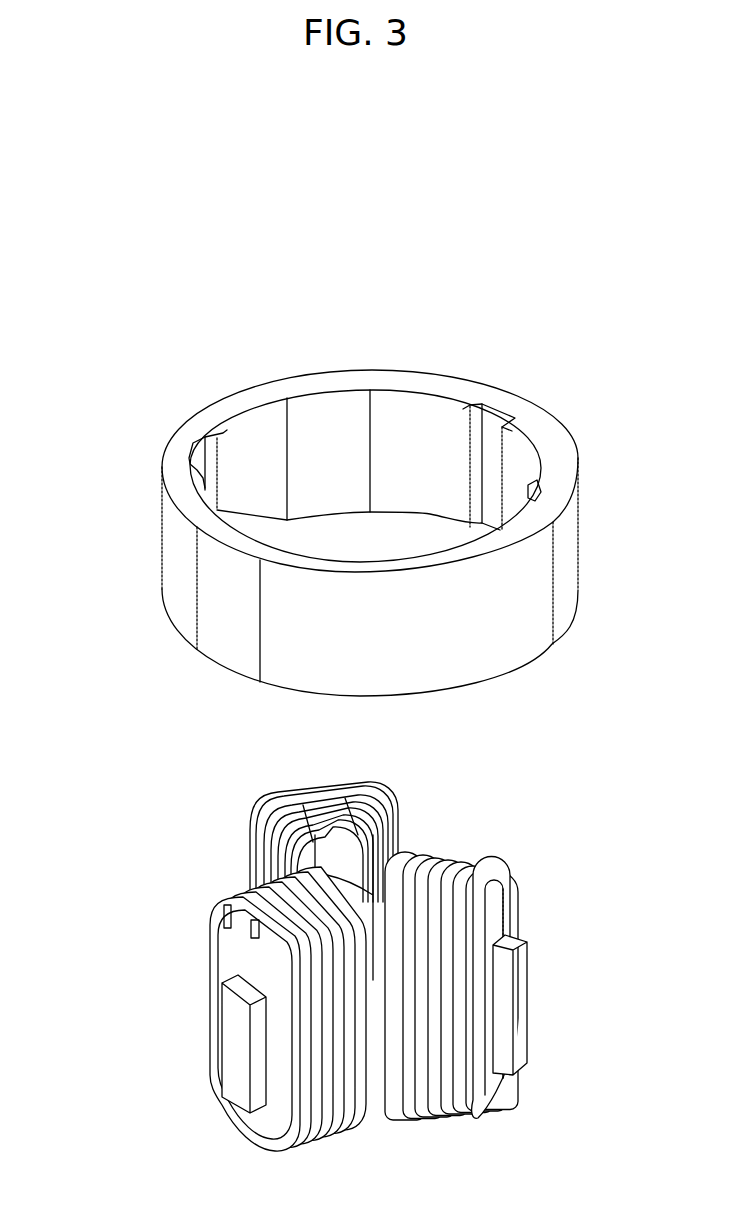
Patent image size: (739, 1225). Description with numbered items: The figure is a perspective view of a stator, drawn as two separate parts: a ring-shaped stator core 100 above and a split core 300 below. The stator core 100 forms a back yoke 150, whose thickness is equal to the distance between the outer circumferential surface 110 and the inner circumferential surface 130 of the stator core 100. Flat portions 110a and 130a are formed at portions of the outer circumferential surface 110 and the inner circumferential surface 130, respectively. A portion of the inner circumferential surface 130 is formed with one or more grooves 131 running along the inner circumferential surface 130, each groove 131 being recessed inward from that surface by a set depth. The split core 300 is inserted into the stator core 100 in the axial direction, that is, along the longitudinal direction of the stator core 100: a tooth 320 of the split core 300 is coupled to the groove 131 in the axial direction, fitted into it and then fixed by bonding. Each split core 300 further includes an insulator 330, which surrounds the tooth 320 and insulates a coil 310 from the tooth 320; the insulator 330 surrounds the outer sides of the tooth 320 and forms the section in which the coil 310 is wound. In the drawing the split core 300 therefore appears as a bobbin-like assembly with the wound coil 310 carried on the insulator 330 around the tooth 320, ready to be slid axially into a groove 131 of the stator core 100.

The stator core 100 is at (85, 411).
The outer circumferential surface 110 is at (518, 612).
The flat portion 110a is at (563, 538).
The inner circumferential surface 130 is at (317, 420).
The flat portion 130a is at (530, 483).
The groove 131 is at (495, 418).
The back yoke 150 is at (197, 510).
The split core 300 is at (85, 835).
The coil 310 is at (447, 1032).
The tooth 320 is at (238, 1060).
The insulator 330 is at (297, 1108).